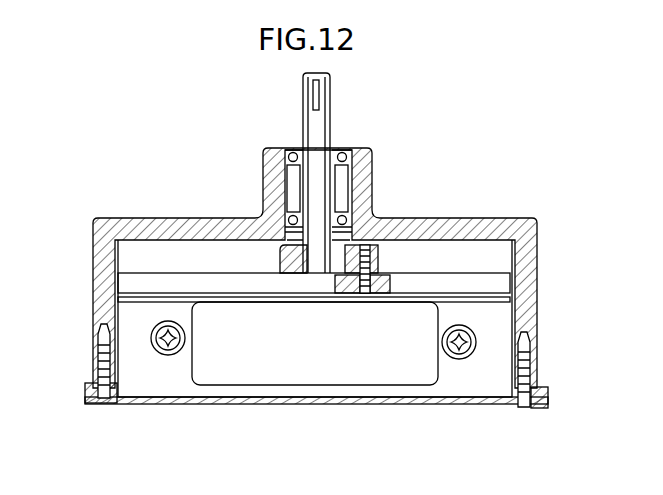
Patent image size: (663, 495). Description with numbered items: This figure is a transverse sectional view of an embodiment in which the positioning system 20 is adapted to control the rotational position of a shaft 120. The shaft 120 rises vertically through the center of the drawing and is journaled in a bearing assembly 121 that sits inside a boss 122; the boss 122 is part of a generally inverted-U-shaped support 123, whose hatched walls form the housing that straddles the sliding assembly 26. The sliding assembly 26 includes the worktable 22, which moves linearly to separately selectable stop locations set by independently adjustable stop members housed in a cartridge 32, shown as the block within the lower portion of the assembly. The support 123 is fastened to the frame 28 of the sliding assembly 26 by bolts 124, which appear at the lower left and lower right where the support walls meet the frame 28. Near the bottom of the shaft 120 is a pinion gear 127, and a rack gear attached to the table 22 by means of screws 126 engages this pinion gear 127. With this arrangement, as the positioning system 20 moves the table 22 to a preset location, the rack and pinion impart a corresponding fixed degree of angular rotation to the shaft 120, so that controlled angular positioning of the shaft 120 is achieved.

The shaft 120 is at (320, 137).
The bearing assembly 121 is at (296, 185).
The boss 122 is at (372, 183).
The support 123 is at (478, 228).
The pinion gear 127 is at (283, 255).
The screws 126 is at (362, 248).
The worktable 22 is at (505, 283).
The sliding assembly 26 is at (510, 300).
The bolts 124 is at (100, 356).
The positioning system 20 is at (158, 386).
The cartridge 32 is at (380, 373).
The frame 28 is at (468, 404).